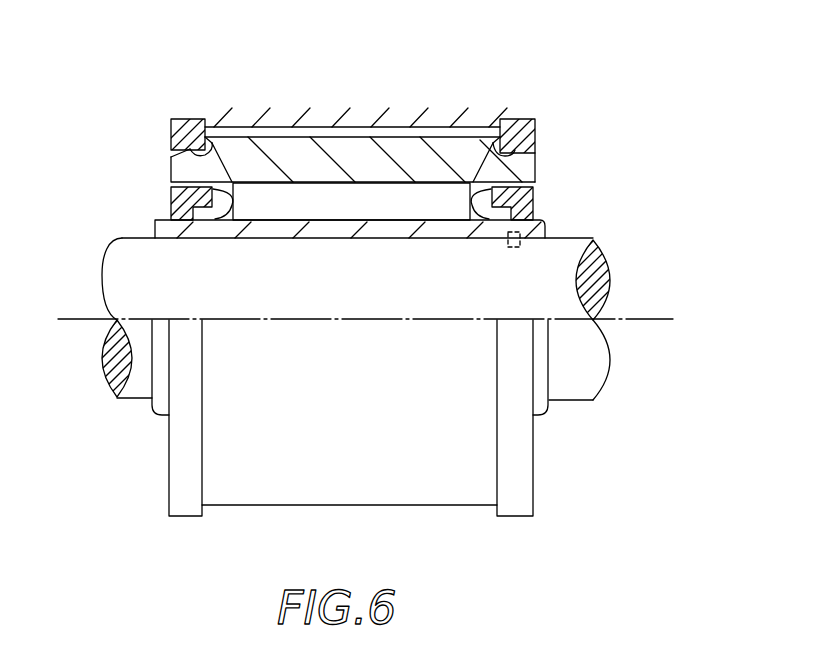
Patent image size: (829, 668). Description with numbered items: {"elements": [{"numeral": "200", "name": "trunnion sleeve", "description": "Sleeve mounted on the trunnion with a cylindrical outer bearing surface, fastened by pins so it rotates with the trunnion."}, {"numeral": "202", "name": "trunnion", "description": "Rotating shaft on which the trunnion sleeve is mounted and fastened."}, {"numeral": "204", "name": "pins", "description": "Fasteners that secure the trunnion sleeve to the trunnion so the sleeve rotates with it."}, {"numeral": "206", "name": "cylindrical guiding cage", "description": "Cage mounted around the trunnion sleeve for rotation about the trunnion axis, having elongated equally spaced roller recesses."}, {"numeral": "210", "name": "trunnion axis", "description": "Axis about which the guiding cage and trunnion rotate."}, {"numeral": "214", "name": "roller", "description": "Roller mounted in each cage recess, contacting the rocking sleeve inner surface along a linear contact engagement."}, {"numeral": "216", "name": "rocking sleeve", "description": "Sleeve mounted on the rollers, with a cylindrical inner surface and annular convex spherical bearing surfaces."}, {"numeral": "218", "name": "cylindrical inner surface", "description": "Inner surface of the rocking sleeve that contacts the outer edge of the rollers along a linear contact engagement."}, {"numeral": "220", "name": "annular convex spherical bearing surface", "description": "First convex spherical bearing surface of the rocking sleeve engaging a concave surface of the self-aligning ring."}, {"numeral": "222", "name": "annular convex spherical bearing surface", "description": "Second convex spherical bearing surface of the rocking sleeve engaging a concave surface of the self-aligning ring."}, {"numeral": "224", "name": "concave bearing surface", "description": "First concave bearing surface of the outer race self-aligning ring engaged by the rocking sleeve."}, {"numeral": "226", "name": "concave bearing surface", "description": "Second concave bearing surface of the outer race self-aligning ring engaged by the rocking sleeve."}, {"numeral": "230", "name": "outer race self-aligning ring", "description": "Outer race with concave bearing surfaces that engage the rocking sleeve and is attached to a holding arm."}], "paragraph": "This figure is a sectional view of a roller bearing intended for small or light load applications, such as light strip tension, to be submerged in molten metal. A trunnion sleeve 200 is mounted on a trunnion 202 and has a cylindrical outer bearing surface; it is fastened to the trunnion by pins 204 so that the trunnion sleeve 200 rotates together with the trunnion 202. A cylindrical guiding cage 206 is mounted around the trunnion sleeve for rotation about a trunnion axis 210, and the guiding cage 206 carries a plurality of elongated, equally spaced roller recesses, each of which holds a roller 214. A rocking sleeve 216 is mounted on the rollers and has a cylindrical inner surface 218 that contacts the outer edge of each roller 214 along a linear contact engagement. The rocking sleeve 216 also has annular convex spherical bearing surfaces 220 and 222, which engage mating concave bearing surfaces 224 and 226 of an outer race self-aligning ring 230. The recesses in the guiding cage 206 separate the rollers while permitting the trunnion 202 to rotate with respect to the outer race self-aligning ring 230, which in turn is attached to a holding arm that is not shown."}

The base sleeve 200 is at (157, 225).
The shaft 202 is at (116, 274).
The sensor region 204 is at (522, 233).
The lower right retaining ring 206 is at (533, 185).
The axis 210 is at (633, 317).
The inner ring 214 is at (437, 210).
The outer ring 216 is at (362, 153).
The bearing body 218 is at (297, 187).
The lower left retaining ring 220 is at (170, 138).
The right end block 222 is at (520, 118).
The left seal lip 224 is at (205, 148).
The right seal lip 226 is at (503, 150).
The left end block 230 is at (180, 118).